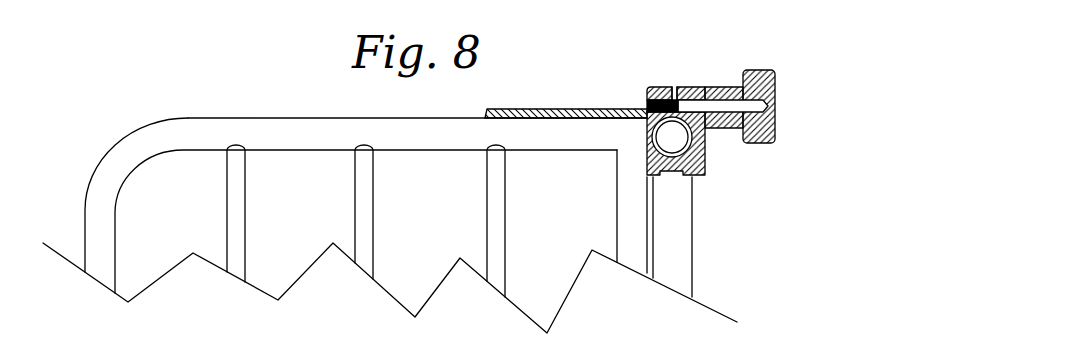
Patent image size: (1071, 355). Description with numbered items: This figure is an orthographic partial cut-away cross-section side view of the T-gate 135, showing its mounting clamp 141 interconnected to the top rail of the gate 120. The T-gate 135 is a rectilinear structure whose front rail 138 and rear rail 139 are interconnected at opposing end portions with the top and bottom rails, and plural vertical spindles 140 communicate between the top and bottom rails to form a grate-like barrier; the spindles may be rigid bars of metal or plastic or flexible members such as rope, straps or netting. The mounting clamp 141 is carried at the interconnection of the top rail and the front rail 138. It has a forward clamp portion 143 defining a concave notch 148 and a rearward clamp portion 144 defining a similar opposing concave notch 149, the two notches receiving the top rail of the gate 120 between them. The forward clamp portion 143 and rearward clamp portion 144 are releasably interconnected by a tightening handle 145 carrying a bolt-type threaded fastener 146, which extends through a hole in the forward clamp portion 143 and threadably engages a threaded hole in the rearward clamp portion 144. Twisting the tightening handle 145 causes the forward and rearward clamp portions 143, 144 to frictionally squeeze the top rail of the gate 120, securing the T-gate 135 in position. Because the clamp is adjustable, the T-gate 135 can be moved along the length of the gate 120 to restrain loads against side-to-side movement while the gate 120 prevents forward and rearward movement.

The gate 120 is at (295, 353).
The T-gate 135 is at (290, 110).
The front rail 138 is at (632, 240).
The rear rail 139 is at (97, 238).
The vertical spindles 140 is at (232, 215).
The mounting clamp 141 is at (670, 76).
The forward clamp portion 143 is at (683, 87).
The rearward clamp portion 144 is at (655, 88).
The tightening handle 145 is at (768, 70).
The bolt-type threaded fastener 146 is at (647, 108).
The concave notch 148 is at (705, 137).
The concave notch 149 is at (645, 132).